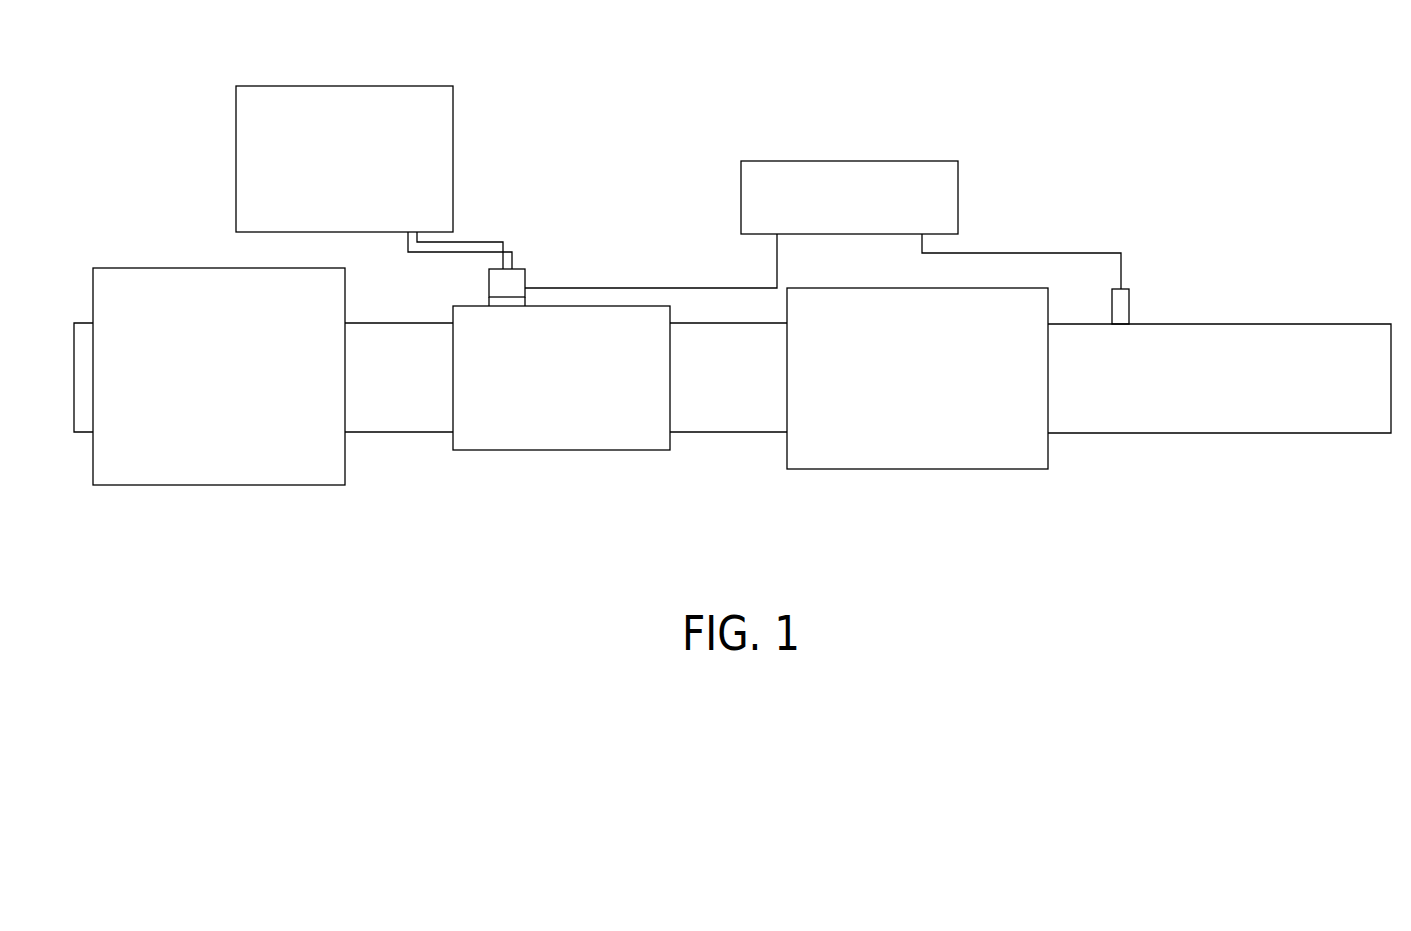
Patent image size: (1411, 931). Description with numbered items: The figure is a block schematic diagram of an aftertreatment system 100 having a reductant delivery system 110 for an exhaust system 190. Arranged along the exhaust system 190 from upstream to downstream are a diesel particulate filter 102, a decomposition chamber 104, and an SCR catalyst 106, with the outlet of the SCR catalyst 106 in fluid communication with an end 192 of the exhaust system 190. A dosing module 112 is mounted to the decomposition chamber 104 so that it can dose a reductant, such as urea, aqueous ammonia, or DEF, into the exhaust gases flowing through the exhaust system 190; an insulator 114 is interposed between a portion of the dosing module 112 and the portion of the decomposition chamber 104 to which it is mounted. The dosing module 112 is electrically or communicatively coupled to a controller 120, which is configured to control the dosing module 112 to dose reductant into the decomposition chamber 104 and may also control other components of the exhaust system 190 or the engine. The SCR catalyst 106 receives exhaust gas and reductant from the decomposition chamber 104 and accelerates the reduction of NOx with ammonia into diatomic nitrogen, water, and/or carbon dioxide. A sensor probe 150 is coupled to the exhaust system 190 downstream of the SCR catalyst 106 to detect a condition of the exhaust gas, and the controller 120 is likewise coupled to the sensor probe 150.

The aftertreatment system 100 is at (1000, 231).
The diesel particulate filter 102 is at (250, 485).
The decomposition chamber 104 is at (657, 306).
The SCR catalyst 106 is at (930, 469).
The reductant delivery system 110 is at (625, 210).
The dosing module 112 is at (525, 282).
The insulator 114 is at (410, 86).
The controller 120 is at (830, 161).
The sensor probe 150 is at (1152, 303).
The exhaust system 190 is at (441, 526).
The end of the exhaust system 192 is at (1306, 445).